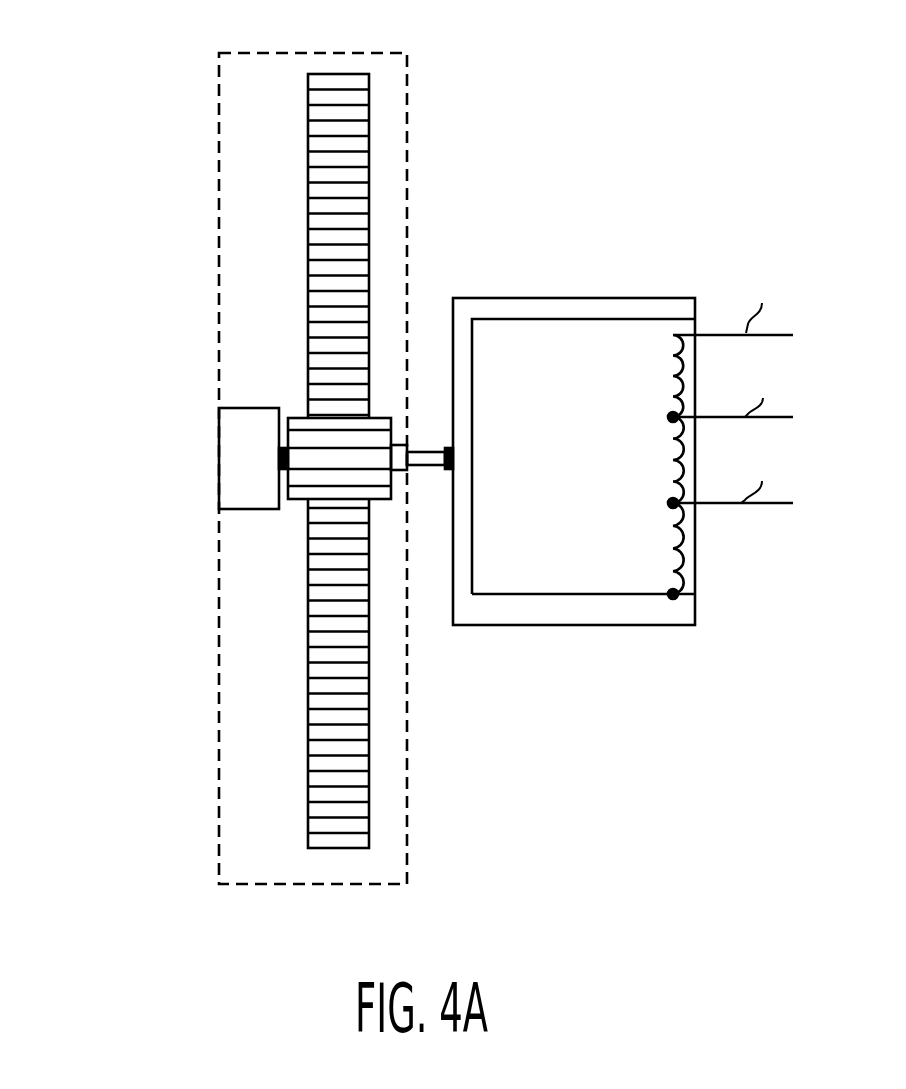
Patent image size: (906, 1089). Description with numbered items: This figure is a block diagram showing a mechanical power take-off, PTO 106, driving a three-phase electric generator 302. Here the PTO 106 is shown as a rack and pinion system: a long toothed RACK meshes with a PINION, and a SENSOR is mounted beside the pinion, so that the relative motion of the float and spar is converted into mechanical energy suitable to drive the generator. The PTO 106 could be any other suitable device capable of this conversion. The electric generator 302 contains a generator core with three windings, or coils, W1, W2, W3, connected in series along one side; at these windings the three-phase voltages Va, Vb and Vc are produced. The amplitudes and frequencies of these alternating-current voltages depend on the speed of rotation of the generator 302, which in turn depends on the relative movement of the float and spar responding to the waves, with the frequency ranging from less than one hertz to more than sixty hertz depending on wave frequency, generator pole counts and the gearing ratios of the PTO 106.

The PTO 106 is at (283, 468).
The electric generator 302 is at (485, 298).
The rack RACK is at (357, 128).
The pinion PINION is at (295, 419).
The sensor SENSOR is at (233, 492).
The winding w1 W1 is at (710, 376).
The winding w2 W2 is at (710, 457).
The winding w3 W3 is at (710, 548).